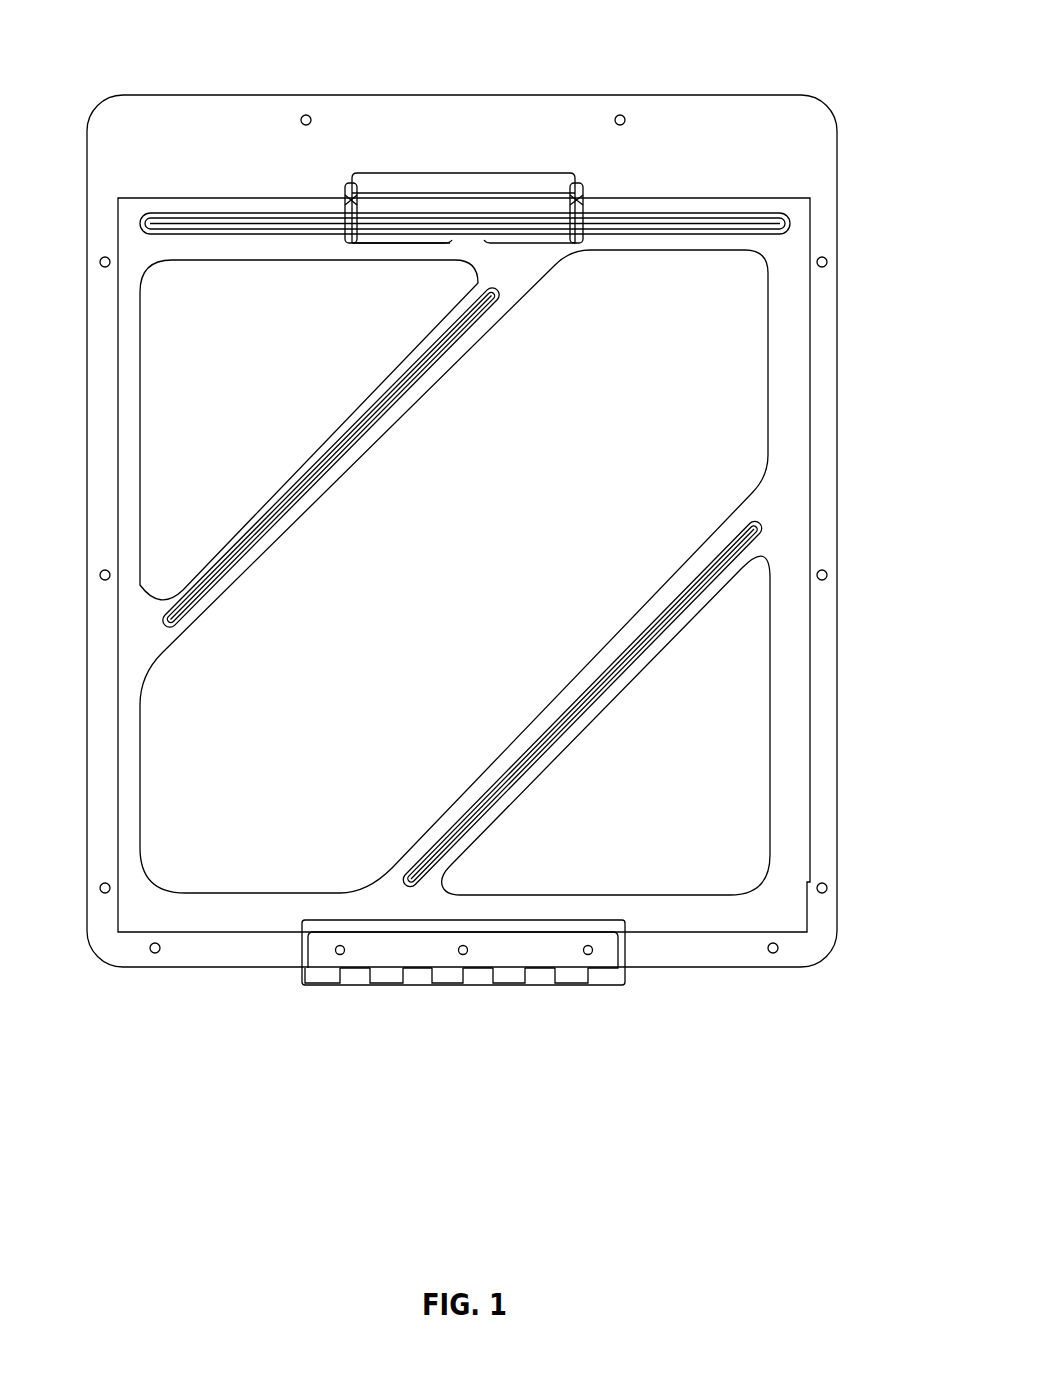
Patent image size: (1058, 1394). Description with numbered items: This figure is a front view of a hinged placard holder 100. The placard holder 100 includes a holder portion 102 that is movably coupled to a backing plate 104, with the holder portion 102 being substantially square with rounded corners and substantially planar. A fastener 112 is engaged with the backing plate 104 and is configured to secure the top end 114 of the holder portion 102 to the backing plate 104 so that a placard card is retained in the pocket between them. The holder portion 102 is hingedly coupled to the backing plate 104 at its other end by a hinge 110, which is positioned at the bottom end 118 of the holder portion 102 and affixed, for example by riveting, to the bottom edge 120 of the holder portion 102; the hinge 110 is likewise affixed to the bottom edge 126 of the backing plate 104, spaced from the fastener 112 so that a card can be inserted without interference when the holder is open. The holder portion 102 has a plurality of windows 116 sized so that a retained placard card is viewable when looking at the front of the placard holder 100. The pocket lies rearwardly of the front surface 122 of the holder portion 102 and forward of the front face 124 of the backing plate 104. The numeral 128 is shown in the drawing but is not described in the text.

The placard holder 100 is at (799, 76).
The holder portion 102 is at (725, 910).
The backing plate 104 is at (630, 155).
The hinge 110 is at (468, 985).
The fastener 112 is at (470, 200).
The top end 114 is at (789, 245).
The windows 116 is at (350, 327).
The bottom end 118 is at (774, 879).
The bottom edge 120 is at (640, 968).
The front surface 122 is at (154, 913).
The front face 124 is at (174, 132).
The bottom edge of backing plate 126 is at (813, 946).
The bottom flange 128 is at (275, 960).